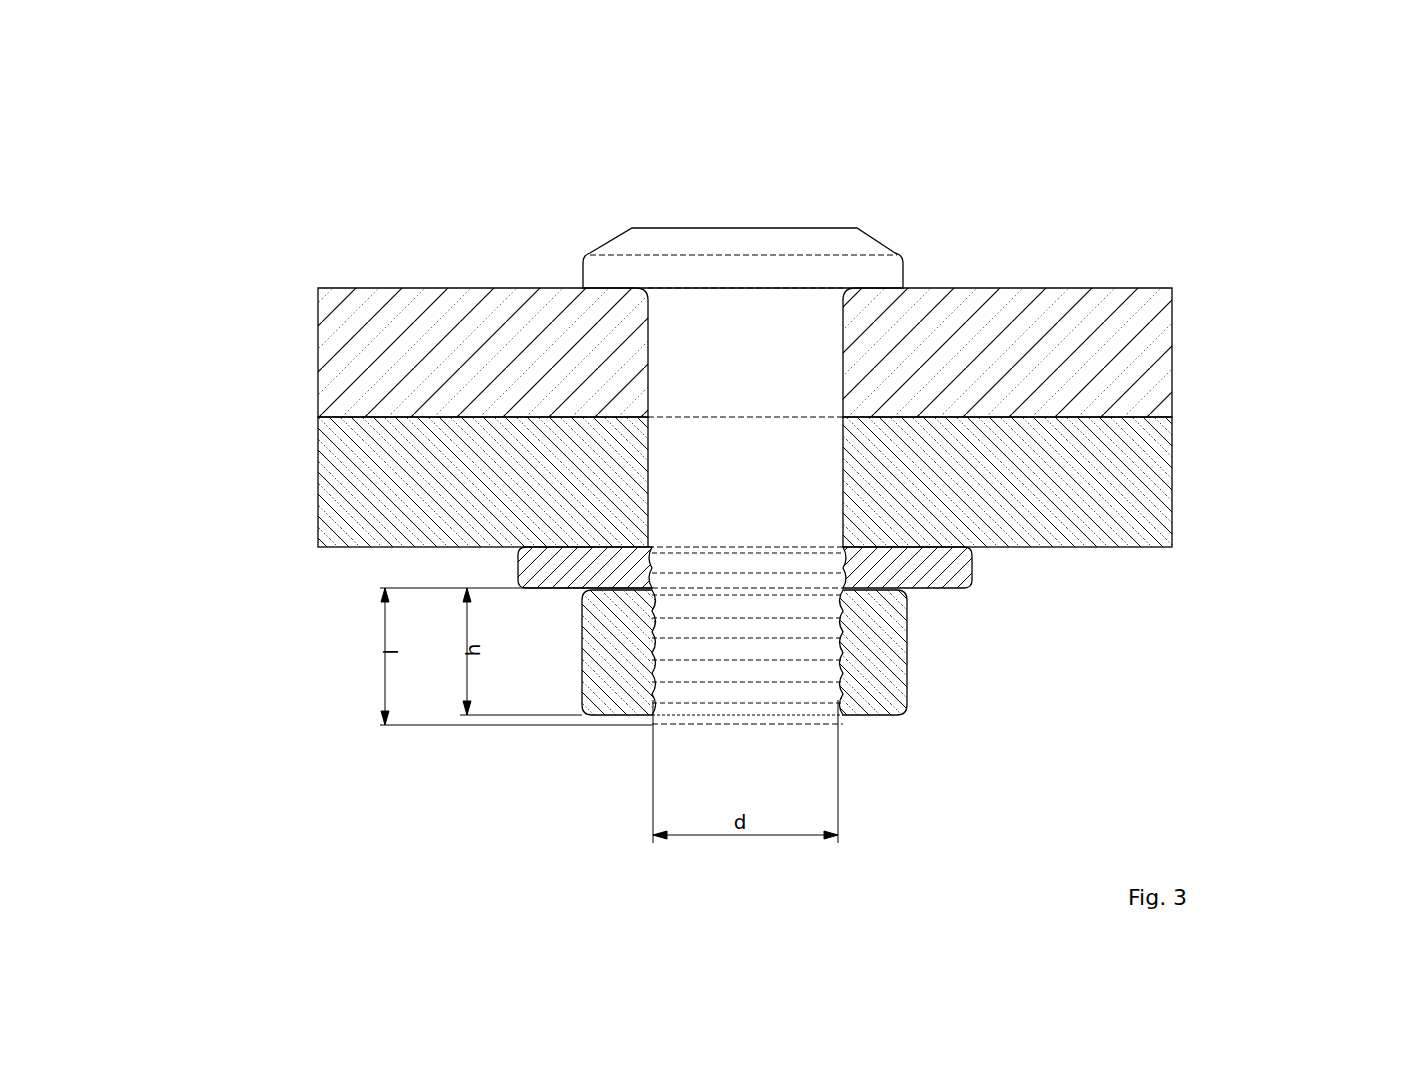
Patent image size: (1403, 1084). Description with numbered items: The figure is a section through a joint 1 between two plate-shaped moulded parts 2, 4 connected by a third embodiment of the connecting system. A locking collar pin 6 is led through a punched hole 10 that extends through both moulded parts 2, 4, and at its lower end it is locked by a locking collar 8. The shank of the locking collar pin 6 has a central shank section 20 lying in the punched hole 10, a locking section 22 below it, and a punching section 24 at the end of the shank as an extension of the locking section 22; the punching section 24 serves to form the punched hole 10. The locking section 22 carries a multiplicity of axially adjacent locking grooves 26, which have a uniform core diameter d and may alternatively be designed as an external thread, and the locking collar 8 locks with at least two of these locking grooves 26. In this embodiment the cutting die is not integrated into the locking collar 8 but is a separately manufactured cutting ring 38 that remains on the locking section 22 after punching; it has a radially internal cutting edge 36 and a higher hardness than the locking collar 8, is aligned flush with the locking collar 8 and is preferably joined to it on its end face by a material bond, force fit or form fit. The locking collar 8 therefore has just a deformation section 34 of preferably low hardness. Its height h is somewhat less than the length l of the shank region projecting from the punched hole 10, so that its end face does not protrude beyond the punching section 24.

The joint 1 is at (418, 210).
The moulded part 2 is at (1135, 367).
The moulded part 4 is at (1125, 520).
The locking collar pin 6 is at (908, 260).
The locking collar 8 is at (910, 670).
The punched hole 10 is at (850, 352).
The central shank section 20 is at (847, 466).
The locking section 22 is at (843, 683).
The punching section 24 is at (848, 728).
The locking grooves 26 is at (782, 628).
The deformation section 34 is at (880, 705).
The cutting edge 36 is at (640, 533).
The cutting ring 38 is at (950, 568).